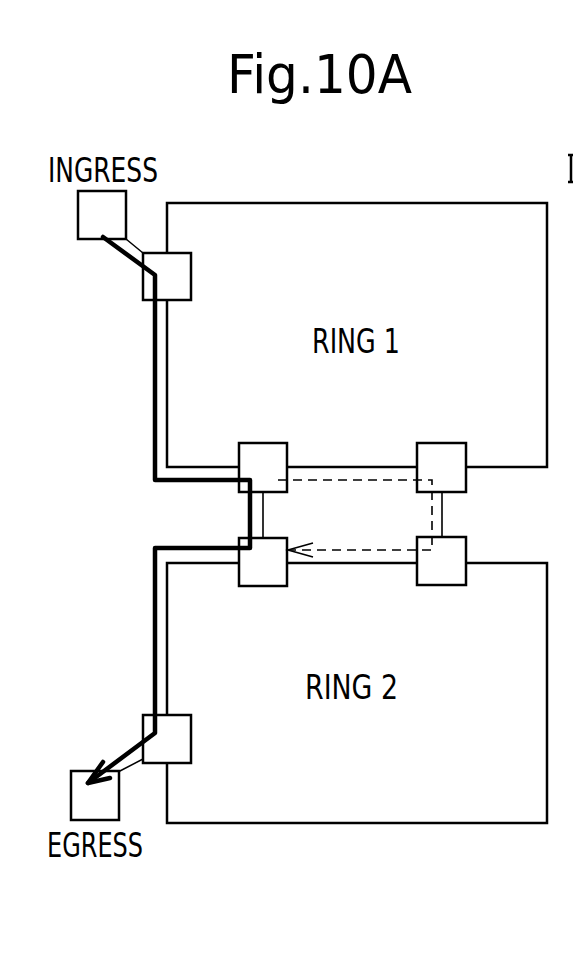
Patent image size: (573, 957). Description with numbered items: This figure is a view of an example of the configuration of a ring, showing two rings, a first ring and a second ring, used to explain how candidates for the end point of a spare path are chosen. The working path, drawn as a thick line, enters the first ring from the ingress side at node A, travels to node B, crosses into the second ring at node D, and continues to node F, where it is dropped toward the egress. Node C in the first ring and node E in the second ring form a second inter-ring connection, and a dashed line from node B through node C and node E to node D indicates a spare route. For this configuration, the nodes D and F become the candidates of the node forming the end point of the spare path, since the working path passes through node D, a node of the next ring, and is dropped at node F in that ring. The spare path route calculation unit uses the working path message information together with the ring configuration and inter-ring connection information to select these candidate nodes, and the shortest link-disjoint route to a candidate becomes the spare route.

The node A is at (183, 274).
The node B is at (263, 448).
The node C is at (441, 448).
The node D is at (263, 585).
The node E is at (441, 585).
The node F is at (182, 739).